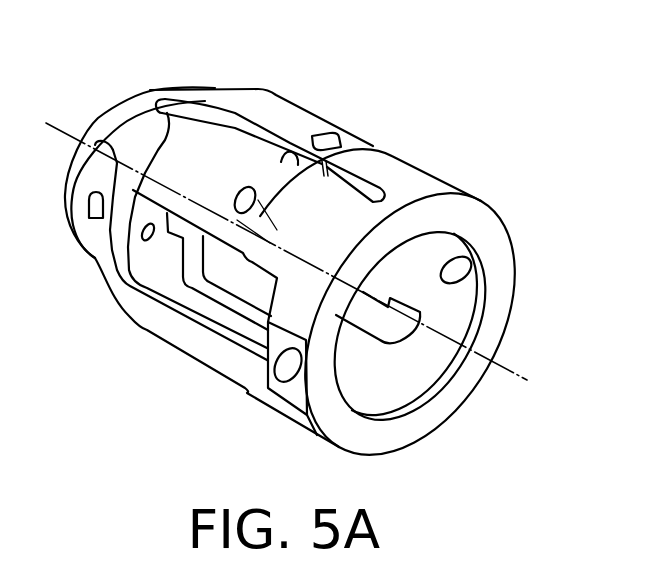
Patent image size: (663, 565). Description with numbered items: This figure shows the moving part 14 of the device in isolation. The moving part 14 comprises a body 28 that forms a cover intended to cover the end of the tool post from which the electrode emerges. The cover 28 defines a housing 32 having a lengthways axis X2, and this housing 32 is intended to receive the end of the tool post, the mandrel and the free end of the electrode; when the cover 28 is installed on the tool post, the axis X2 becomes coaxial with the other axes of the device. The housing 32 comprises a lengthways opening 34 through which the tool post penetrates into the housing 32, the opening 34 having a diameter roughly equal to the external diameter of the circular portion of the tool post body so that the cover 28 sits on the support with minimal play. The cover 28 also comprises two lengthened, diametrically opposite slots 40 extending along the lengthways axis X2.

The moving part 14 is at (335, 114).
The body 28 is at (407, 182).
The housing 32 is at (387, 383).
The lengthways opening 34 is at (490, 293).
The slots 40 is at (251, 126).
The axis X2 is at (513, 370).